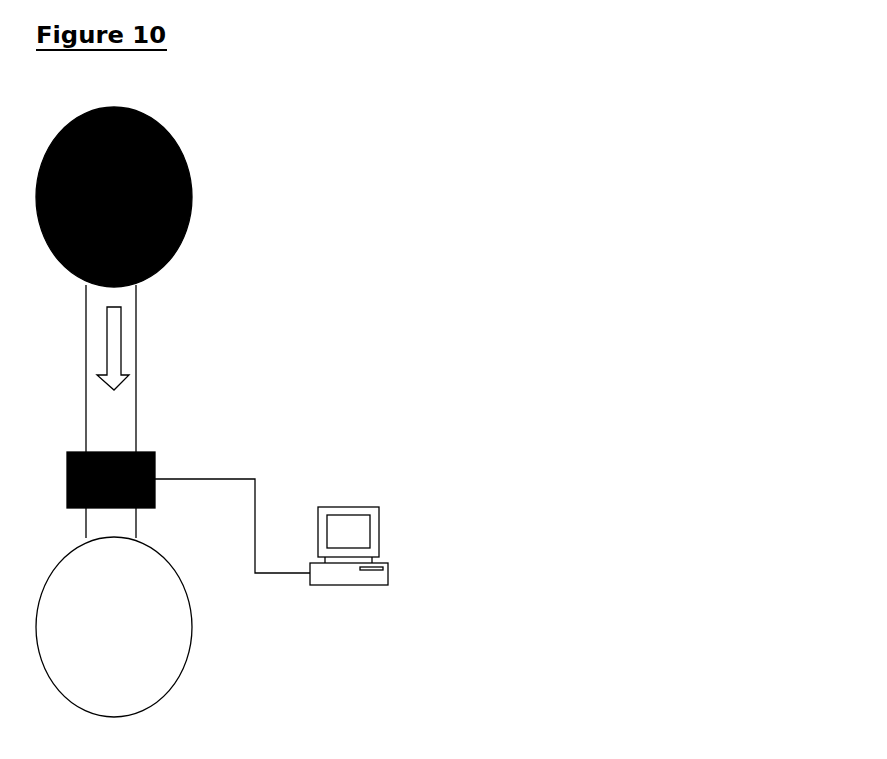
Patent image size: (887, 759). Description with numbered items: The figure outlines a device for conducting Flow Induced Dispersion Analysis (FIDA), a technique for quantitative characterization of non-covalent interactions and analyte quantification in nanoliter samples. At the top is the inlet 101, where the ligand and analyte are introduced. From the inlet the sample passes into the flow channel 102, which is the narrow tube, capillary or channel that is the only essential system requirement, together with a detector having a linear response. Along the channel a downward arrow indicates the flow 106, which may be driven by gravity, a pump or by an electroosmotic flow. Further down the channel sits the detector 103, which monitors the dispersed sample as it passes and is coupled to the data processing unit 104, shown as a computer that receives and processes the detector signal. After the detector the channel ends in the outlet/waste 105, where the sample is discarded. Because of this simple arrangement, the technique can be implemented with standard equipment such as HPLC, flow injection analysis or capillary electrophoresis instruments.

The inlet 101 is at (201, 203).
The flow channel 102 is at (138, 322).
The detector 103 is at (155, 455).
The data processing unit 104 is at (380, 545).
The outlet/waste 105 is at (196, 620).
The flow 106 is at (118, 378).